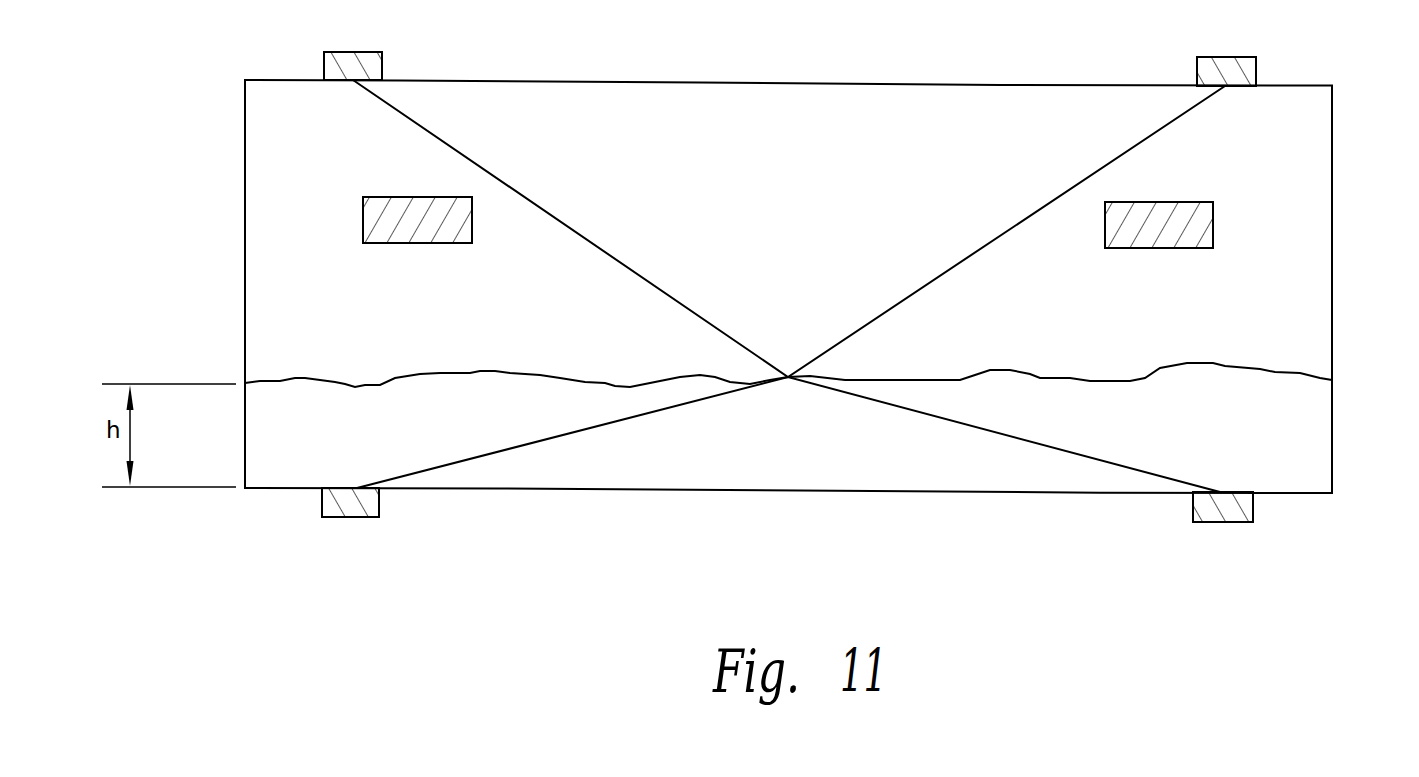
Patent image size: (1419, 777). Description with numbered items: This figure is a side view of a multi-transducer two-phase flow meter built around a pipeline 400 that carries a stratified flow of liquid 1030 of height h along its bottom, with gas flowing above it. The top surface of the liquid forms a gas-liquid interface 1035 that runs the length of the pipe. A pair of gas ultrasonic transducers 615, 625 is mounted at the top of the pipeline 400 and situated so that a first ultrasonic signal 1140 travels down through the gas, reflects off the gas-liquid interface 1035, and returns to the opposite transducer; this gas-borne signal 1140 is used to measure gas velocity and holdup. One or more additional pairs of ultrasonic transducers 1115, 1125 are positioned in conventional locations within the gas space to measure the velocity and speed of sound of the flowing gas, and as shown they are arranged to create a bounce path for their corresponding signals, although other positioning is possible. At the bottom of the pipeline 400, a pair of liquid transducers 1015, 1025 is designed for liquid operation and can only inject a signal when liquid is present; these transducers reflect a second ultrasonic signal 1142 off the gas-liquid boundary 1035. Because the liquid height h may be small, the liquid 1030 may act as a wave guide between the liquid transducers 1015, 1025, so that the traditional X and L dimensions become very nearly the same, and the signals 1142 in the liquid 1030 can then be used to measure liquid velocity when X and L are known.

The pipeline 400 is at (861, 83).
The gas ultrasonic transducer 615 is at (384, 60).
The gas ultrasonic transducer 625 is at (1258, 60).
The additional ultrasonic transducer 1115 is at (362, 220).
The additional ultrasonic transducer 1125 is at (1215, 225).
The liquid transducer 1015 is at (381, 510).
The liquid transducer 1025 is at (1255, 513).
The first ultrasonic signal 1140 is at (579, 227).
The second ultrasonic signal 1142 is at (575, 433).
The liquid 1030 is at (1320, 418).
The gas-liquid interface 1035 is at (1213, 362).